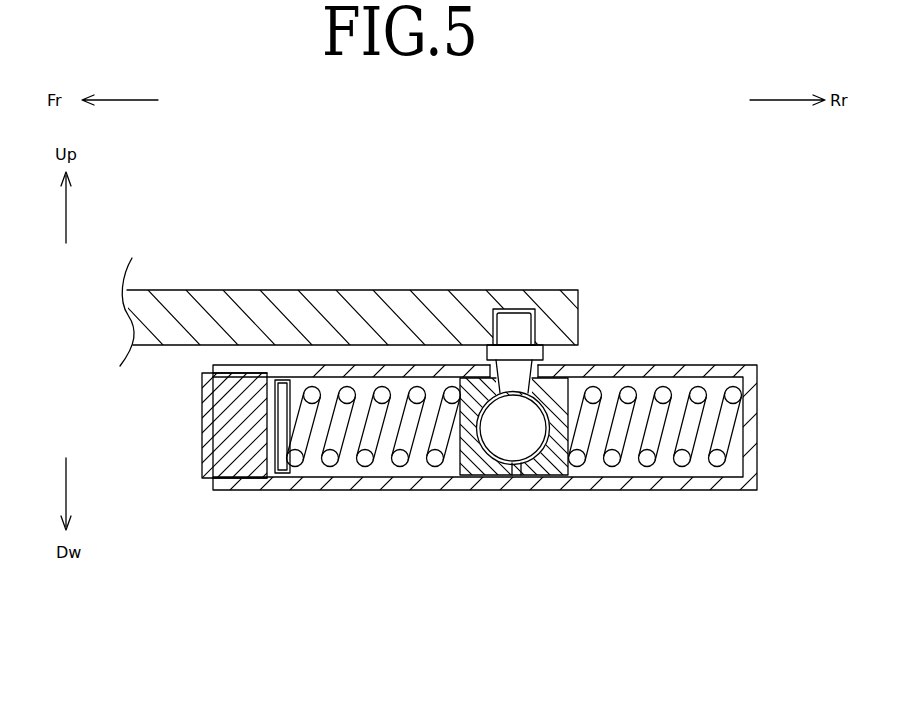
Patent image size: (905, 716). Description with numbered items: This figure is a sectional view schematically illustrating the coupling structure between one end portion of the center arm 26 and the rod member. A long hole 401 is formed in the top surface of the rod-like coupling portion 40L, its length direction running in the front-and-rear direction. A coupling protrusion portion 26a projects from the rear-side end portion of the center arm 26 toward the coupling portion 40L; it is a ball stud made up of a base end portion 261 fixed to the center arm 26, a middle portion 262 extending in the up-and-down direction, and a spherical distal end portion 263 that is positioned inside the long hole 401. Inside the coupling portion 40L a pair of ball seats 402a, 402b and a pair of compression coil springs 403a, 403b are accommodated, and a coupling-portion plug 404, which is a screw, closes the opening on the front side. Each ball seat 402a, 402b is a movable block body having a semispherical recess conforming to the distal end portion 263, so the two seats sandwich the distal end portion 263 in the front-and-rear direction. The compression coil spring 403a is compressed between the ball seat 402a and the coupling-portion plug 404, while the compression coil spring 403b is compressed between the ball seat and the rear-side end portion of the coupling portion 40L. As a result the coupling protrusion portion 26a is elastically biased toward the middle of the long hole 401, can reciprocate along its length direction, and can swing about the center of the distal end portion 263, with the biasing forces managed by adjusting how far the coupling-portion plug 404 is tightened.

The center arm 26 is at (245, 290).
The coupling protrusion portion 26a is at (525, 437).
The base end portion 261 is at (512, 330).
The middle portion 262 is at (515, 378).
The distal end portion 263 is at (508, 440).
The coupling portion 40L is at (471, 437).
The long hole 401 is at (637, 376).
The ball seat 402a is at (483, 457).
The ball seat 402b is at (535, 463).
The compression coil spring 403a is at (327, 468).
The compression coil spring 403b is at (685, 460).
The coupling-portion plug 404 is at (202, 442).